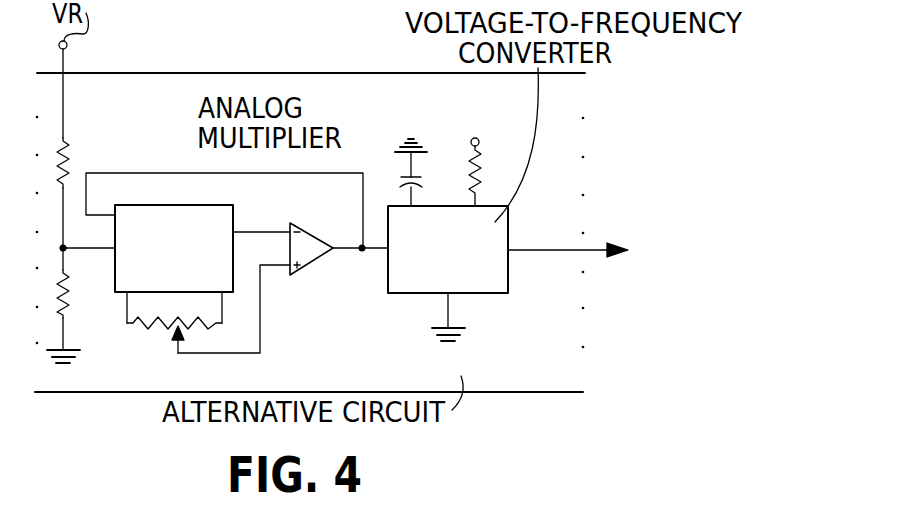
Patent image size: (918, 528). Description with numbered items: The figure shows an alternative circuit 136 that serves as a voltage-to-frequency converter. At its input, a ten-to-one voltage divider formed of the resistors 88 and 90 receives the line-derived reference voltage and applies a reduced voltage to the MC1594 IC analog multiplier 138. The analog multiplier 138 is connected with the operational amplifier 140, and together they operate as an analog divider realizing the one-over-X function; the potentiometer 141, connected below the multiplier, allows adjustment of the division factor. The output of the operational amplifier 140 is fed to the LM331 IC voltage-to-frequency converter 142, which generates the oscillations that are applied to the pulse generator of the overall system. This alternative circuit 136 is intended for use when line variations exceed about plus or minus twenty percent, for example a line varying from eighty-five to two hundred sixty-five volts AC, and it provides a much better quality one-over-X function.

The alternative circuit 136 is at (172, 63).
The resistor 88 is at (66, 143).
The resistor 90 is at (67, 293).
The analog multiplier 138 is at (194, 264).
The operational amplifier 140 is at (308, 250).
The potentiometer 141 is at (165, 327).
The voltage-to-frequency converter 142 is at (470, 267).